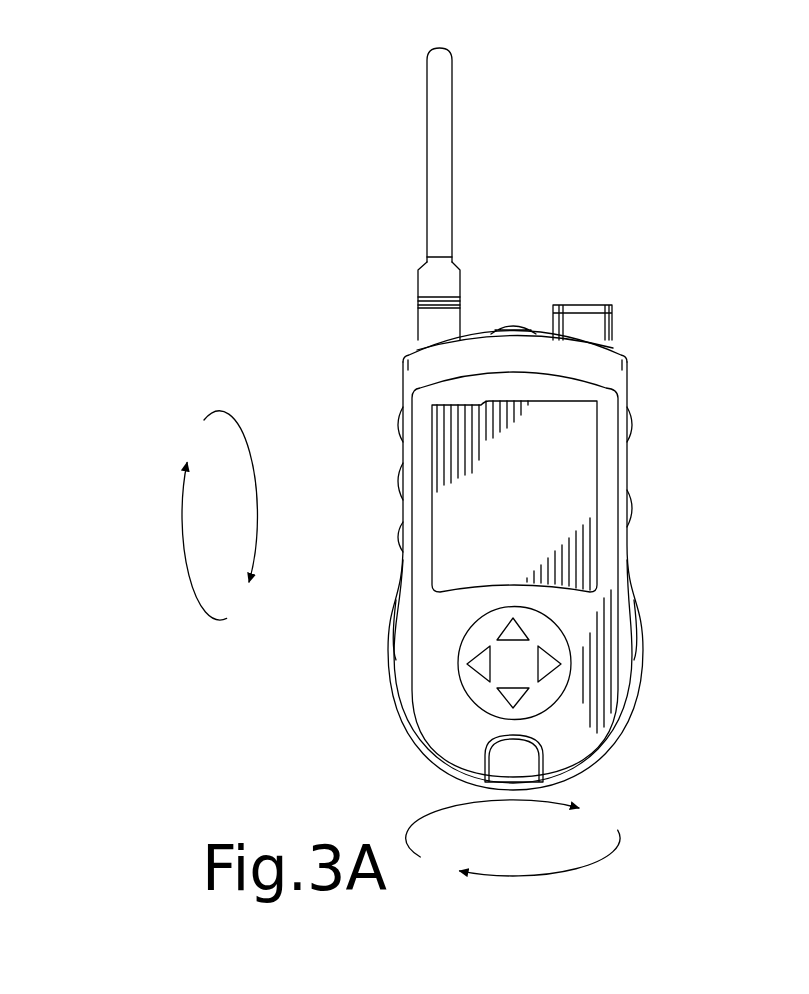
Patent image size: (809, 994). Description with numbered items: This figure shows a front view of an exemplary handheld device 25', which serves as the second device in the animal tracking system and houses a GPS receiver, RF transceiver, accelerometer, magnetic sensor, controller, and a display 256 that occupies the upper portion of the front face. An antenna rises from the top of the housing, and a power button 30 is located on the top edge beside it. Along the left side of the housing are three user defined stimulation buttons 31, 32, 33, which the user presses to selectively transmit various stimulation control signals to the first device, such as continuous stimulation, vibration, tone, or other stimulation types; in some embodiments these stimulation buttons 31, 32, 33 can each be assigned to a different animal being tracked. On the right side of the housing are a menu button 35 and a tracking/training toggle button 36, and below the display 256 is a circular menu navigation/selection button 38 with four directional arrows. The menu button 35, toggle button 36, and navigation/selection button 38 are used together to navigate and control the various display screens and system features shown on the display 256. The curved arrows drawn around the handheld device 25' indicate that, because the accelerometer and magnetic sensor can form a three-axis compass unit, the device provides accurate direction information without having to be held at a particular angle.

The handheld device 25' is at (489, 419).
The power button 30 is at (512, 325).
The stimulation button 31 is at (398, 422).
The stimulation button 32 is at (397, 480).
The stimulation button 33 is at (395, 530).
The menu button 35 is at (633, 422).
The tracking/training toggle button 36 is at (633, 508).
The menu navigation/selection button 38 is at (480, 697).
The display 256 is at (521, 555).